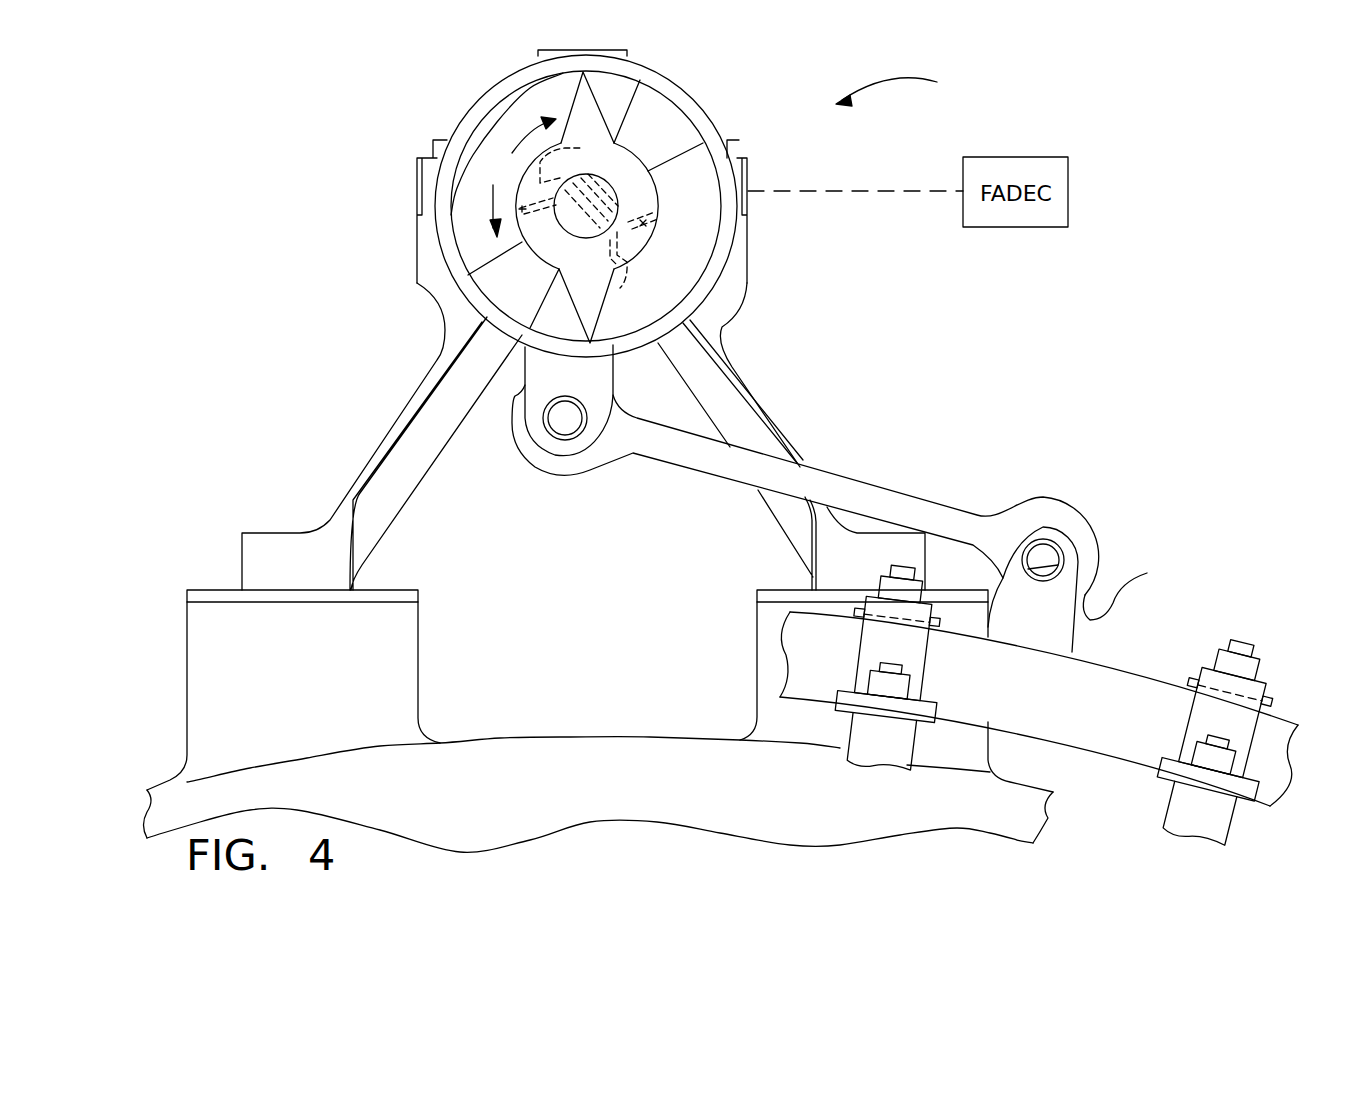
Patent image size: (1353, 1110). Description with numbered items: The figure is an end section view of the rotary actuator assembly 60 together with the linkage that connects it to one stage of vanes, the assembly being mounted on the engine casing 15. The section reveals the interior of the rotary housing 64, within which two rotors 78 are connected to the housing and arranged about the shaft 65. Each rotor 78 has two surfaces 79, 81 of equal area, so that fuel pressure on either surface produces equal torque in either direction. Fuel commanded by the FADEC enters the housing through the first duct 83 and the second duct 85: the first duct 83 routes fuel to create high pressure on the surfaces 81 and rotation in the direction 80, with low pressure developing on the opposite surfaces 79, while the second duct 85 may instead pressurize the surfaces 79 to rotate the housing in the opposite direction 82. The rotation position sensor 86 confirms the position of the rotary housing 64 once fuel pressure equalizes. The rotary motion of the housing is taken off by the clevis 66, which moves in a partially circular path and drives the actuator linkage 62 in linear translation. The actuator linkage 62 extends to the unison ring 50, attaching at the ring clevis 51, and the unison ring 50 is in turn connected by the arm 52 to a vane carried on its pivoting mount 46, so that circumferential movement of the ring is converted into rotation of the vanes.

The engine casing 15 is at (525, 738).
The pivoting mount 46 is at (840, 777).
The unison ring 50 is at (1146, 663).
The ring clevis 51 is at (1131, 589).
The arm 52 is at (897, 642).
The rotary actuator assembly 60 is at (904, 88).
The actuator linkage 62 is at (892, 490).
The rotary housing 64 is at (723, 247).
The shaft 65 is at (635, 193).
The clevis 66 is at (598, 372).
The rotor 78 is at (672, 115).
The surface 79 is at (632, 103).
The direction 80 is at (460, 195).
The surface 81 is at (676, 150).
The direction 82 is at (516, 143).
The first duct 83 is at (660, 240).
The second duct 85 is at (558, 150).
The rotation position sensor 86 is at (530, 180).